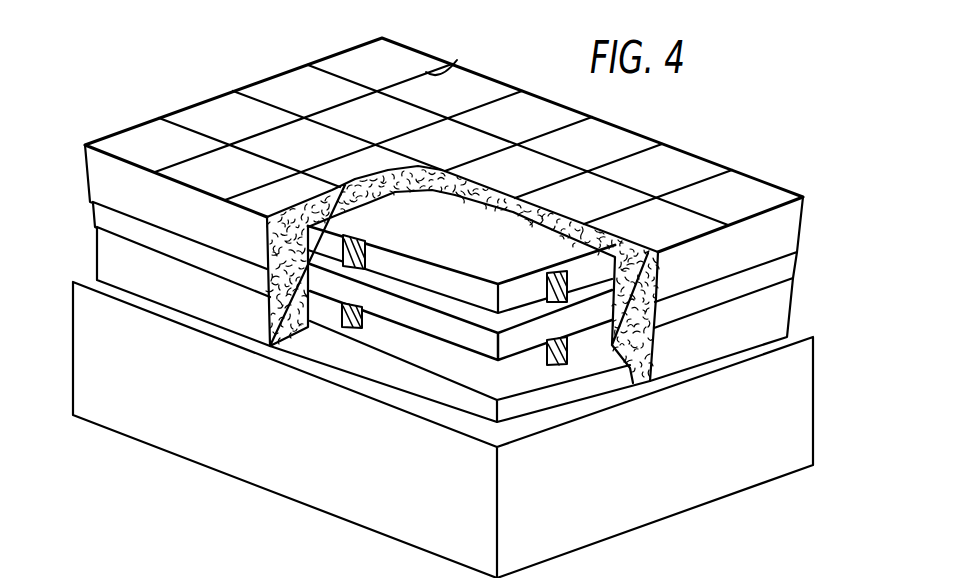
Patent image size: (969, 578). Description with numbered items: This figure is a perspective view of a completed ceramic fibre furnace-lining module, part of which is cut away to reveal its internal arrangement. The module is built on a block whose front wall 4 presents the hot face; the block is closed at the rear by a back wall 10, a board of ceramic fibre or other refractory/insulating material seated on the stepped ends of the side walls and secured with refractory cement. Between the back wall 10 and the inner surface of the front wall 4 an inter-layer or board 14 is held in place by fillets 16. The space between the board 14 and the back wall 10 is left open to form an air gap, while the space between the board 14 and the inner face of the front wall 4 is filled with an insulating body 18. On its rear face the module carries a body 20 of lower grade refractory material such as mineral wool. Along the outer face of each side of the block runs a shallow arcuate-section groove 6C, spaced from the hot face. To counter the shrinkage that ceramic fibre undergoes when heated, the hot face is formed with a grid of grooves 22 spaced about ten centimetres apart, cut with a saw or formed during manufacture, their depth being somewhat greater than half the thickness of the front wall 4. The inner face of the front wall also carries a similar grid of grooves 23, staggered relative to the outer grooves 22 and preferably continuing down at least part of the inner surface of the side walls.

The front wall 4 is at (610, 147).
The shallow arcuate-section groove 6C is at (93, 214).
The back wall 10 is at (367, 362).
The inter-layer or board 14 is at (463, 333).
The fillets 16 is at (590, 287).
The insulating body 18 is at (461, 264).
The body of lower grade refractory material 20 is at (443, 430).
The grid of grooves 22 is at (420, 108).
The grid of grooves on inner face 23 is at (530, 228).